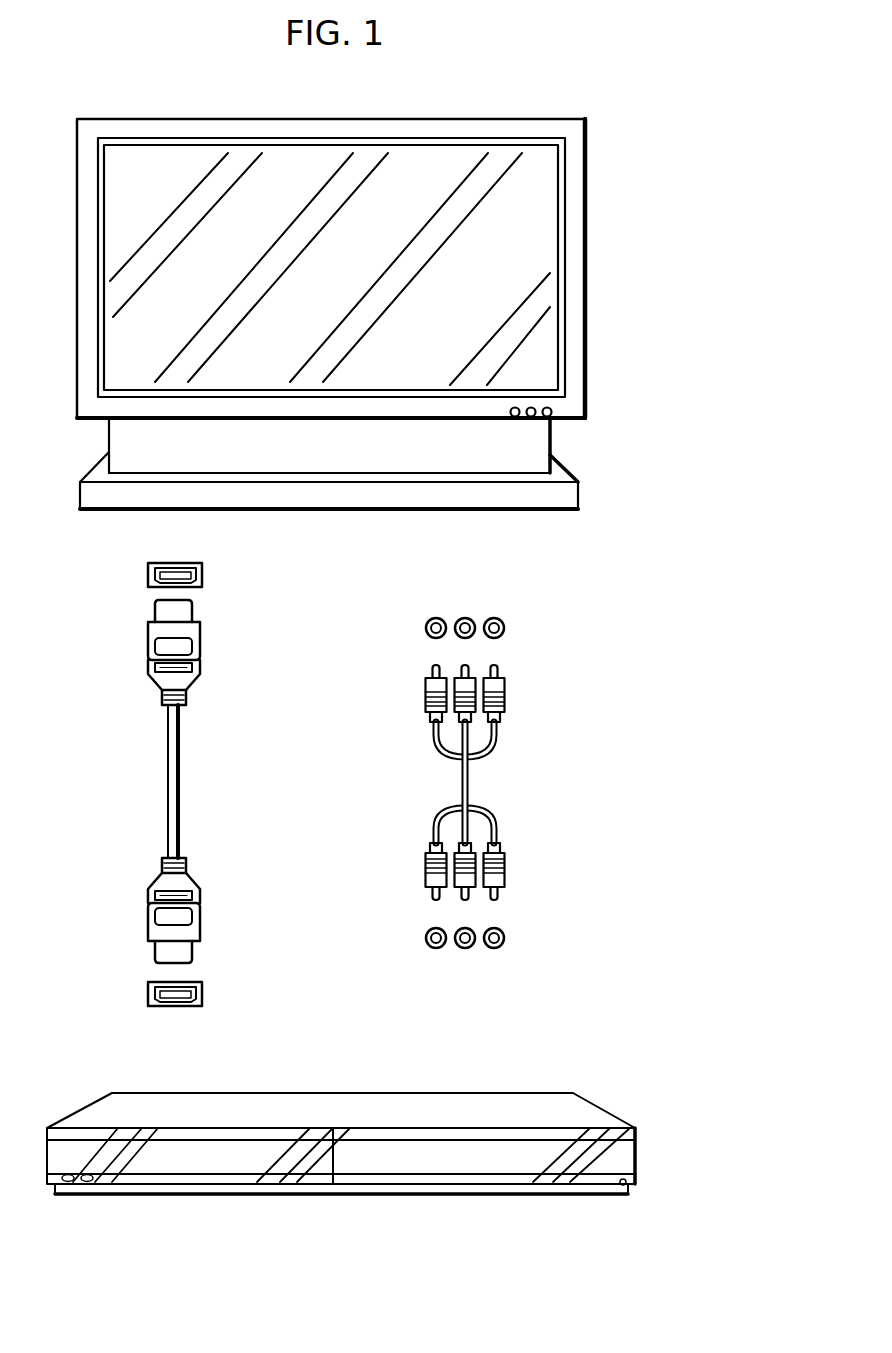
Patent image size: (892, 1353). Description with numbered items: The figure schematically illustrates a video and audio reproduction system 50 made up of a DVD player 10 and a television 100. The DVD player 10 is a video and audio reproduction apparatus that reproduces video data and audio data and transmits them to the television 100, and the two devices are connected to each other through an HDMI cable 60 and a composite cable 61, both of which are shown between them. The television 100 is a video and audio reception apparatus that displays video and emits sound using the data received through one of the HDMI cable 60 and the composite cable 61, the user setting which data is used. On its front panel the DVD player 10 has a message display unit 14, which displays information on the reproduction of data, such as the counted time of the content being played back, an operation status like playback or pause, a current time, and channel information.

The video and audio reproduction system 50 is at (684, 130).
The television 100 is at (522, 120).
The HDMI cable 60 is at (163, 745).
The composite cable 61 is at (497, 738).
The DVD player 10 is at (533, 1094).
The message display unit 14 is at (448, 1170).